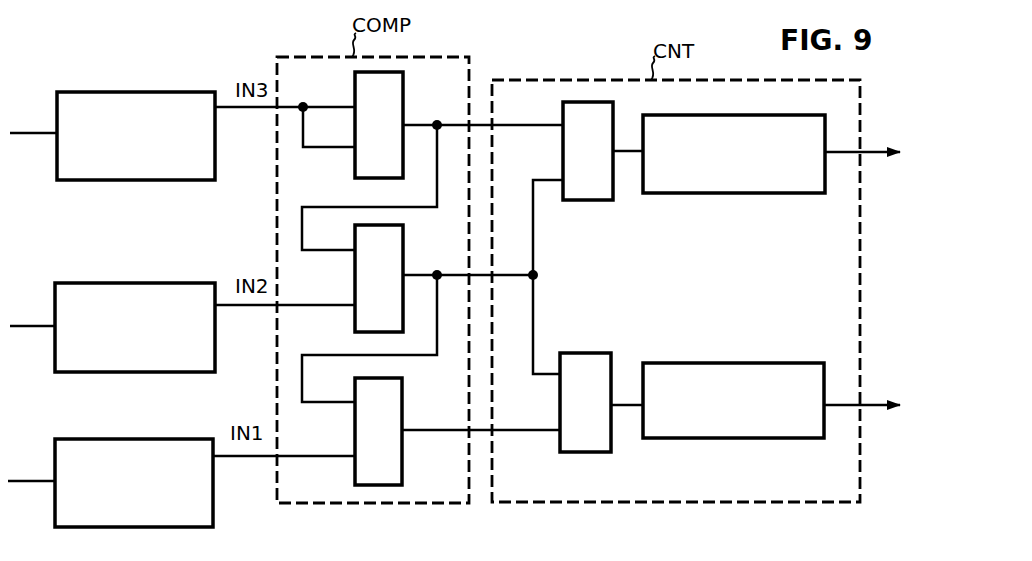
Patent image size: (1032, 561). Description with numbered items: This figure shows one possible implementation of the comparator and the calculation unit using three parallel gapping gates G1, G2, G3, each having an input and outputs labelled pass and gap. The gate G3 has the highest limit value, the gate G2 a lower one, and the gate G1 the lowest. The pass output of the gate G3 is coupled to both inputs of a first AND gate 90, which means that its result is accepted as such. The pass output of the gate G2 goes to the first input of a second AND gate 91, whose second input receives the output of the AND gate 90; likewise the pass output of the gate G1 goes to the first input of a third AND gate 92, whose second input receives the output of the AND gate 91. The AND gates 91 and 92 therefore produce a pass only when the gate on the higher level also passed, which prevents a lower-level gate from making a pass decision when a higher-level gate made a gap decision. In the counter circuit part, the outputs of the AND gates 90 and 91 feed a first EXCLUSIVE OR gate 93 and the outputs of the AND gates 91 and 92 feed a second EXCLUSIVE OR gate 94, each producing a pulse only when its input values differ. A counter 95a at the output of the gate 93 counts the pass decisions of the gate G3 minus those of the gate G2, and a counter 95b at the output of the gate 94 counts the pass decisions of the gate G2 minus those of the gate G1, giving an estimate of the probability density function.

The first AND gate 90 is at (399, 75).
The second AND gate 91 is at (399, 228).
The third AND gate 92 is at (399, 381).
The first EXCLUSIVE OR gate 93 is at (586, 199).
The second EXCLUSIVE OR gate 94 is at (577, 362).
The counter 95a is at (745, 194).
The counter 95b is at (697, 372).
The gapping gate G1 is at (112, 439).
The gapping gate G2 is at (112, 283).
The gapping gate G3 is at (112, 92).